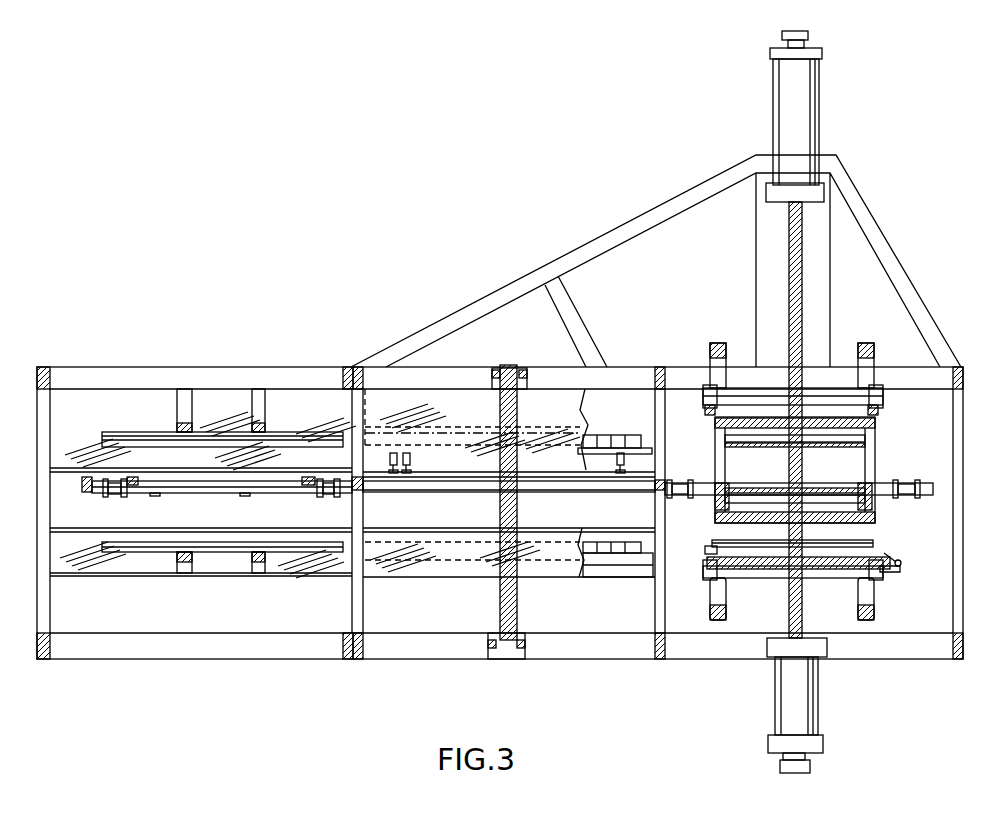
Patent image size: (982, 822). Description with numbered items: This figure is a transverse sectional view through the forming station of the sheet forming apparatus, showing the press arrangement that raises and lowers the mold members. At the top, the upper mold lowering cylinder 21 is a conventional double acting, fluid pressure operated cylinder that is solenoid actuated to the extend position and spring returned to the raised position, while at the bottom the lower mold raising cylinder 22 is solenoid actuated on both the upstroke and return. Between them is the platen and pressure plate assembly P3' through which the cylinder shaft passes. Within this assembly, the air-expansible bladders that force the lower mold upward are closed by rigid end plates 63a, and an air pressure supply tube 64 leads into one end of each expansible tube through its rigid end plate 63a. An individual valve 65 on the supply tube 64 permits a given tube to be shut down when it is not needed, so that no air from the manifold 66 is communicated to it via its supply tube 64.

The upper mold lowering cylinder 21 is at (822, 118).
The lower mold raising cylinder 22 is at (818, 703).
The press platen assembly P3' is at (815, 454).
The rigid end plate 63a is at (703, 551).
The individual valve 65 is at (900, 553).
The air pressure supply tube 64 is at (901, 564).
The manifold 66 is at (905, 566).